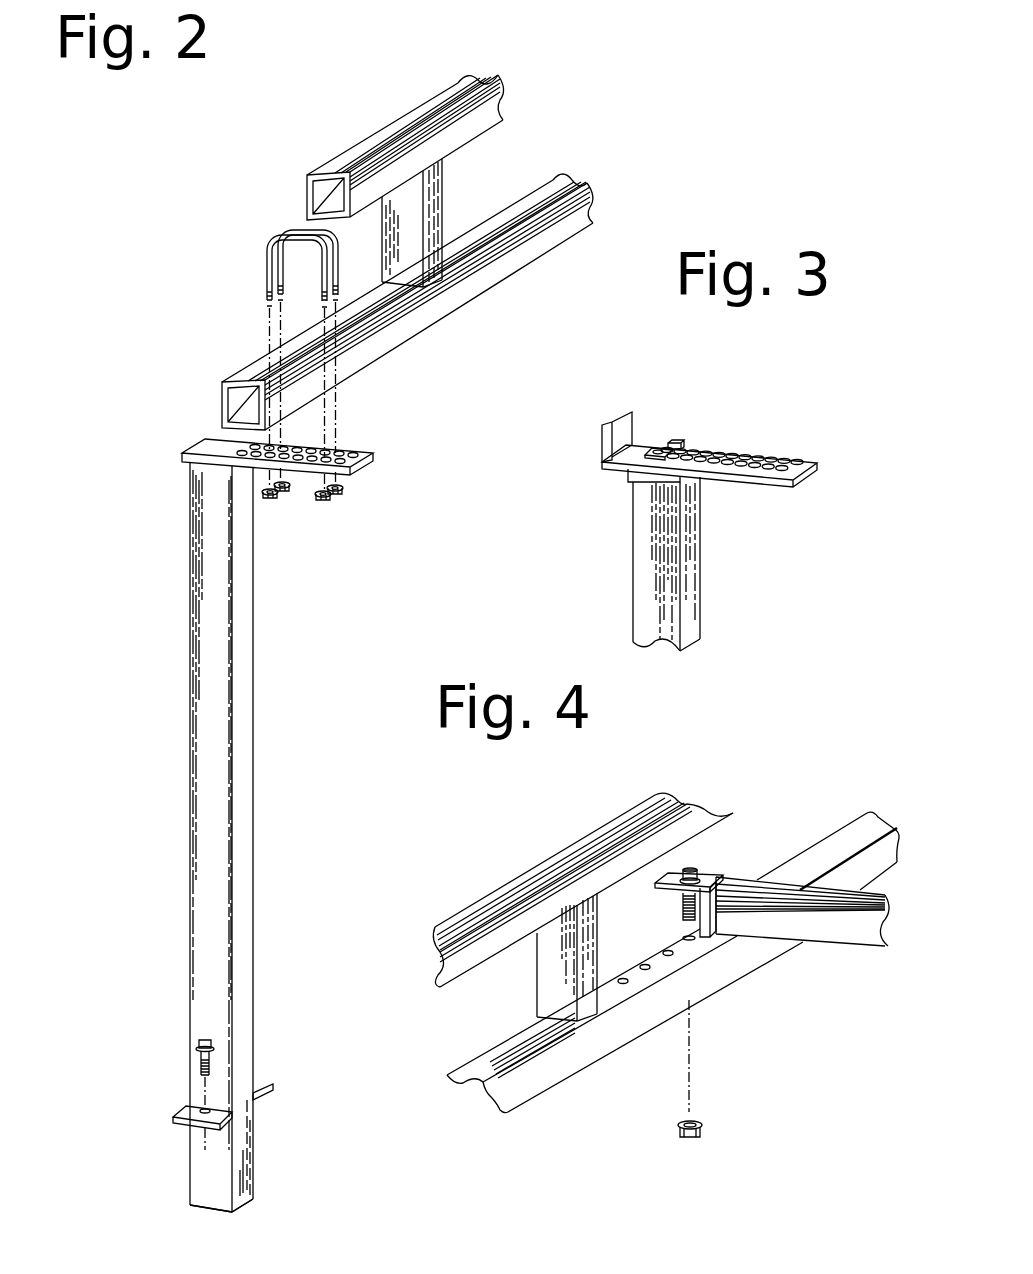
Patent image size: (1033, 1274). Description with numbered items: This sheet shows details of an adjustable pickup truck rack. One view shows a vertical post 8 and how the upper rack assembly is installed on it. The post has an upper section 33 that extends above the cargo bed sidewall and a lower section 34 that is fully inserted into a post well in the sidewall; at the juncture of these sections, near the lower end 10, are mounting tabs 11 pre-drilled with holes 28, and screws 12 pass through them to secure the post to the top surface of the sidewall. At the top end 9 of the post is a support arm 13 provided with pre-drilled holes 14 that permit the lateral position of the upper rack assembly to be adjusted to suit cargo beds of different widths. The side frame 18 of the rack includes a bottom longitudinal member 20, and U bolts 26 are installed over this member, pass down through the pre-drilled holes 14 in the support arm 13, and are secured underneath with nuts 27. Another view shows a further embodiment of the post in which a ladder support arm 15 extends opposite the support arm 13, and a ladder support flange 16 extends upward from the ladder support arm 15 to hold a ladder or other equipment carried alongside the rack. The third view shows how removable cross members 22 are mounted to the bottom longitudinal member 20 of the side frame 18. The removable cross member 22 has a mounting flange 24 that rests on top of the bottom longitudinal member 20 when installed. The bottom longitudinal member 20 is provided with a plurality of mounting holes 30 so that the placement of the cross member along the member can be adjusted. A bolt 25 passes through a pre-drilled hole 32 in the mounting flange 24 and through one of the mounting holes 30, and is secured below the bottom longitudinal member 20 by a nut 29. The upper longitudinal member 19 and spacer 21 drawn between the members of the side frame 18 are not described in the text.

In FIG. 2, the vertical post 8 is at (220, 855).
In FIG. 3, the vertical post 8 is at (664, 560).
In FIG. 2, the top end 9 is at (193, 563).
In FIG. 2, the lower end 10 is at (210, 1210).
In FIG. 2, the mounting tab 11 is at (196, 1075).
In FIG. 2, the screw 12 is at (200, 1053).
In FIG. 2, the support arm 13 is at (335, 425).
In FIG. 3, the support arm 13 is at (778, 440).
In FIG. 2, the pre-drilled holes 14 is at (342, 450).
In FIG. 3, the ladder support arm 15 is at (648, 442).
In FIG. 3, the ladder support flange 16 is at (602, 432).
In FIG. 2, the side frame 18 is at (404, 250).
In FIG. 4, the side frame 18 is at (601, 957).
In FIG. 2, the upper rail 19 is at (420, 113).
In FIG. 4, the upper rail 19 is at (527, 880).
In FIG. 2, the bottom longitudinal member 20 is at (517, 273).
In FIG. 4, the bottom longitudinal member 20 is at (625, 1034).
In FIG. 2, the spacer post 21 is at (440, 205).
In FIG. 4, the spacer post 21 is at (550, 980).
In FIG. 4, the removable cross member 22 is at (857, 933).
In FIG. 4, the mounting flange 24 is at (760, 878).
In FIG. 4, the bolt 25 is at (698, 943).
In FIG. 2, the U bolt 26 is at (290, 232).
In FIG. 2, the nut 27 is at (325, 503).
In FIG. 2, the hole 28 is at (200, 1110).
In FIG. 4, the nut 29 is at (680, 1137).
In FIG. 4, the mounting holes 30 is at (670, 953).
In FIG. 4, the pre-drilled hole 32 is at (675, 893).
In FIG. 2, the upper section 33 is at (253, 733).
In FIG. 2, the lower section 34 is at (256, 1155).